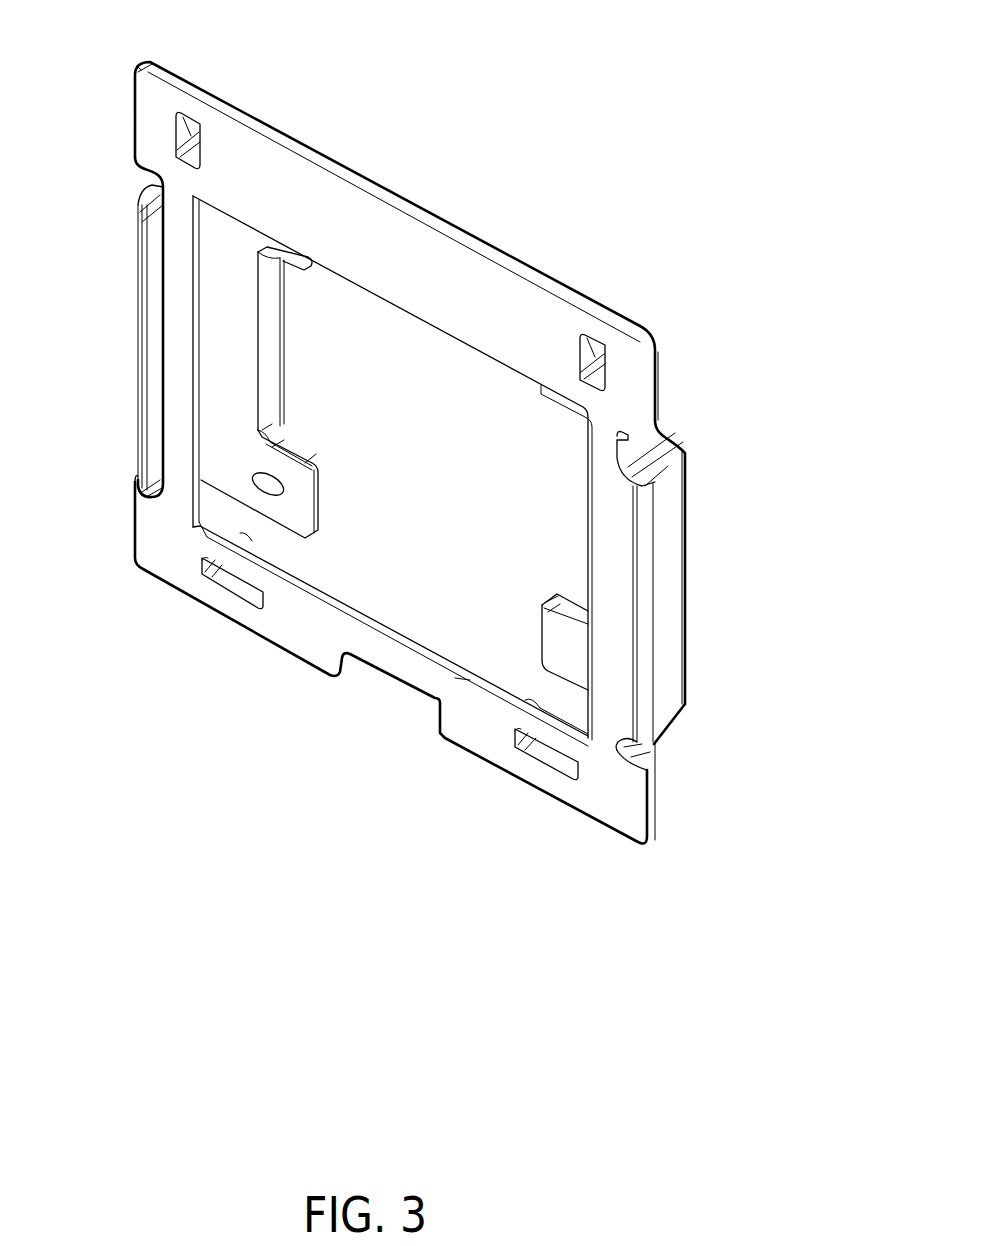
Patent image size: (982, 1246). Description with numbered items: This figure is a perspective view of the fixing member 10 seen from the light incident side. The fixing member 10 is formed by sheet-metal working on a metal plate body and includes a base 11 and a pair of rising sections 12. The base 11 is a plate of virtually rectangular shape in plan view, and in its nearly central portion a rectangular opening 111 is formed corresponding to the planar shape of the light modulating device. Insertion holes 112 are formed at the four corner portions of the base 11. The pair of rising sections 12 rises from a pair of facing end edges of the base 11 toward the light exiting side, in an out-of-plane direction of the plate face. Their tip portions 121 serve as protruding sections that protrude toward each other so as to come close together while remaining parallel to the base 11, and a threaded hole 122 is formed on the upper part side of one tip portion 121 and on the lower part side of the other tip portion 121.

The fixing member 10 is at (586, 130).
The base 11 is at (485, 280).
The rectangular opening 111 is at (300, 580).
The insertion hole 112 is at (188, 128).
The rising section 12 is at (150, 188).
The tip portion 121 is at (238, 248).
The threaded hole 122 is at (268, 483).